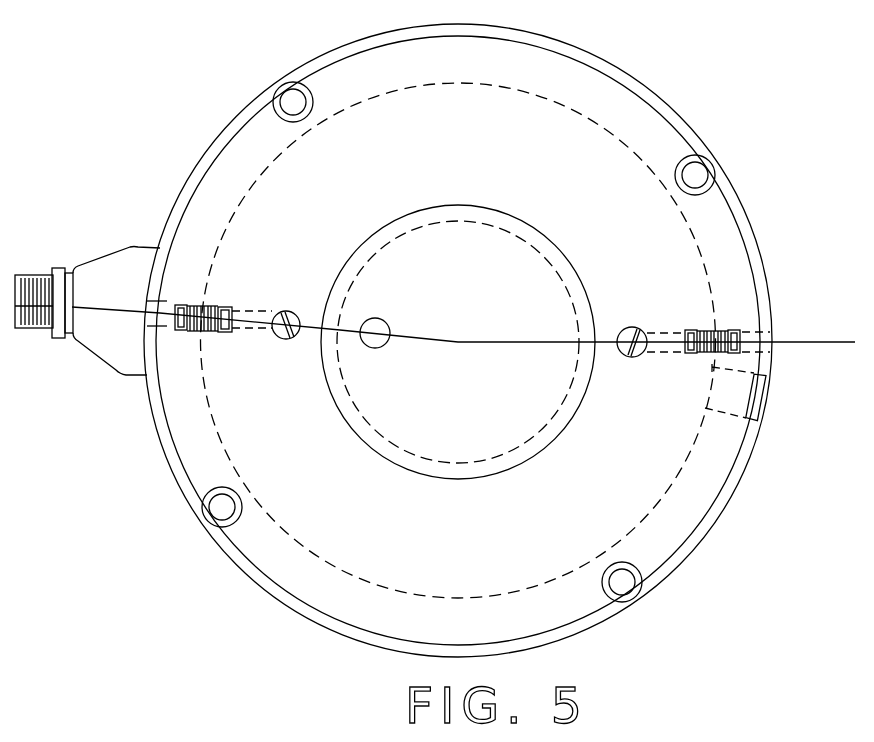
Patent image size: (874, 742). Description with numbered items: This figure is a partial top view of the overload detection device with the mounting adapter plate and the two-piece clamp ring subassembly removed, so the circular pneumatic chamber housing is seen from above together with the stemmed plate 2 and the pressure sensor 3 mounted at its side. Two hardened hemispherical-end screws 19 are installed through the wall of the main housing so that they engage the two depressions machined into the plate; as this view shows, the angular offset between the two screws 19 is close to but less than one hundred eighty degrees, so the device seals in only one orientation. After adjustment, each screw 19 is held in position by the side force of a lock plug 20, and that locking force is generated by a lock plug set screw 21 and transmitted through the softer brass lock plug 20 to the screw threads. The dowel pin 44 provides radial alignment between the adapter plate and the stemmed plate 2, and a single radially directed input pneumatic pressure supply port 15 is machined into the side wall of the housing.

The stemmed plate 2 is at (84, 320).
The pressure sensor 3 is at (93, 280).
The input pneumatic pressure supply port 15 is at (756, 402).
The hemispherical-end screws 19 is at (288, 310).
The lock plugs 20 is at (263, 311).
The lock plug set screws 21 is at (210, 334).
The dowel pin 44 is at (376, 327).